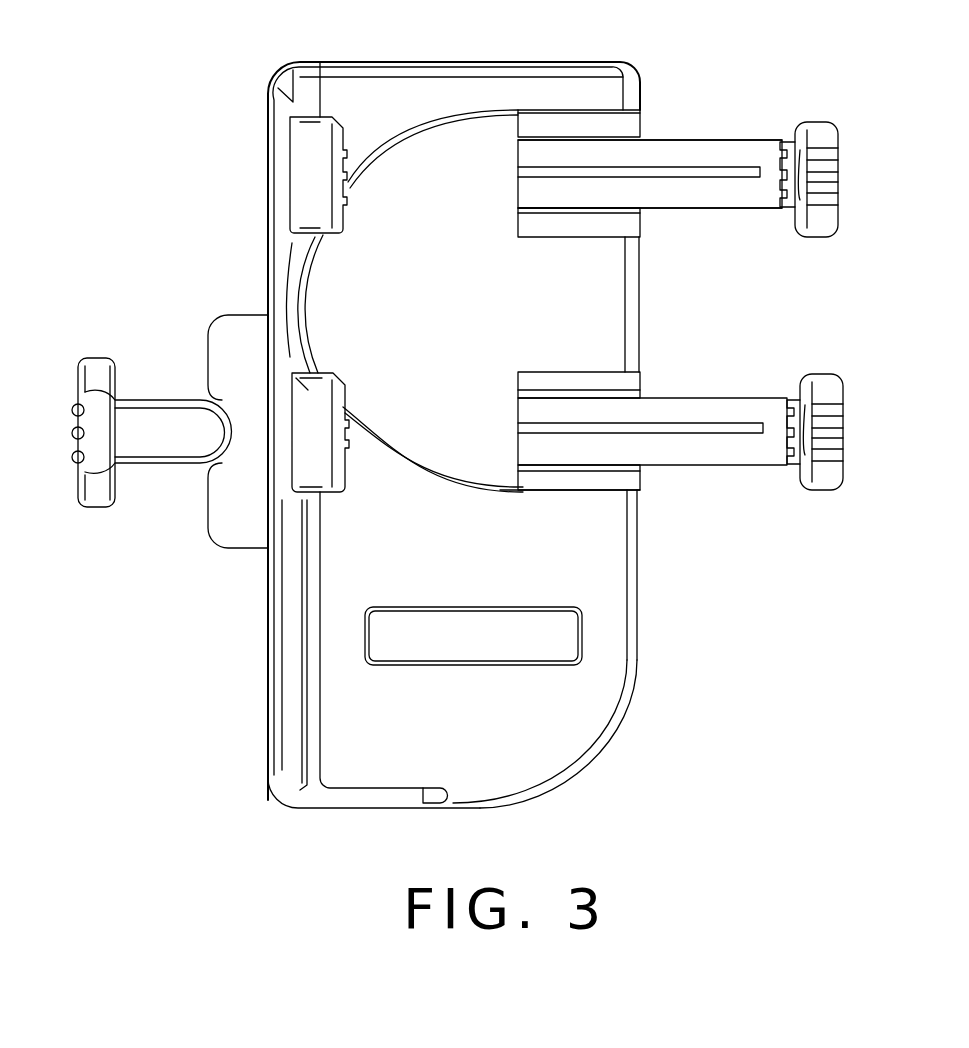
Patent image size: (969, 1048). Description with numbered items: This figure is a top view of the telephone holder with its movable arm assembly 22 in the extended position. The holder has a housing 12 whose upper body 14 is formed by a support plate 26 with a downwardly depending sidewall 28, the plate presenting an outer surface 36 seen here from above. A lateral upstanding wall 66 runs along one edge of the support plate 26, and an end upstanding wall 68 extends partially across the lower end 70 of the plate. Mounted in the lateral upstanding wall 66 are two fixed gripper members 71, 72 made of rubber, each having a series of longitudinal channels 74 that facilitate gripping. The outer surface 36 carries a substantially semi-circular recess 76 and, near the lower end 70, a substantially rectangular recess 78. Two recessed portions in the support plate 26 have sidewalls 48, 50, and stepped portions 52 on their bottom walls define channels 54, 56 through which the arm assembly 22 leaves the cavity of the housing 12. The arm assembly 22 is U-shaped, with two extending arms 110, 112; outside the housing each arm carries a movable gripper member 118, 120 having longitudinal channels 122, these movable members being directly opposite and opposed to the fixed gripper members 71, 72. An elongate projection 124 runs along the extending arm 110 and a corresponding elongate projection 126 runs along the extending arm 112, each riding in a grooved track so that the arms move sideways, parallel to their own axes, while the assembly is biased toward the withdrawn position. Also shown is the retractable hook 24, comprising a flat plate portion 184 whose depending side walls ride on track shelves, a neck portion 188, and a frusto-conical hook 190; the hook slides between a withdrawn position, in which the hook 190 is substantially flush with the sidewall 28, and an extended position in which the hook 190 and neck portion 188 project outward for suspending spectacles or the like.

The housing 12 is at (208, 86).
The upper body 14 is at (350, 63).
The movable arm assembly 22 is at (712, 137).
The retractable hook 24 is at (70, 376).
The support plate 26 is at (607, 662).
The sidewall 28 is at (622, 750).
The outer surface 36 is at (486, 572).
The sidewall 48 is at (607, 232).
The sidewall 50 is at (633, 485).
The stepped portion 52 is at (633, 121).
The channel 54 is at (598, 137).
The channel 56 is at (632, 393).
The lateral upstanding wall 66 is at (295, 666).
The end upstanding wall 68 is at (348, 790).
The lower end 70 is at (472, 768).
The fixed gripper member 71 is at (297, 155).
The fixed gripper member 72 is at (300, 376).
The longitudinal channels 74 is at (345, 163).
The semi-circular recess 76 is at (430, 122).
The rectangular recess 78 is at (457, 652).
The extending arm 110 is at (753, 150).
The extending arm 112 is at (765, 388).
The movable gripper member 118 is at (822, 226).
The movable gripper member 120 is at (830, 473).
The longitudinal channels 122 is at (777, 198).
The elongate projection 124 is at (713, 176).
The elongate projection 126 is at (722, 433).
The flat plate portion 184 is at (225, 545).
The neck portion 188 is at (143, 443).
The hook 190 is at (82, 506).